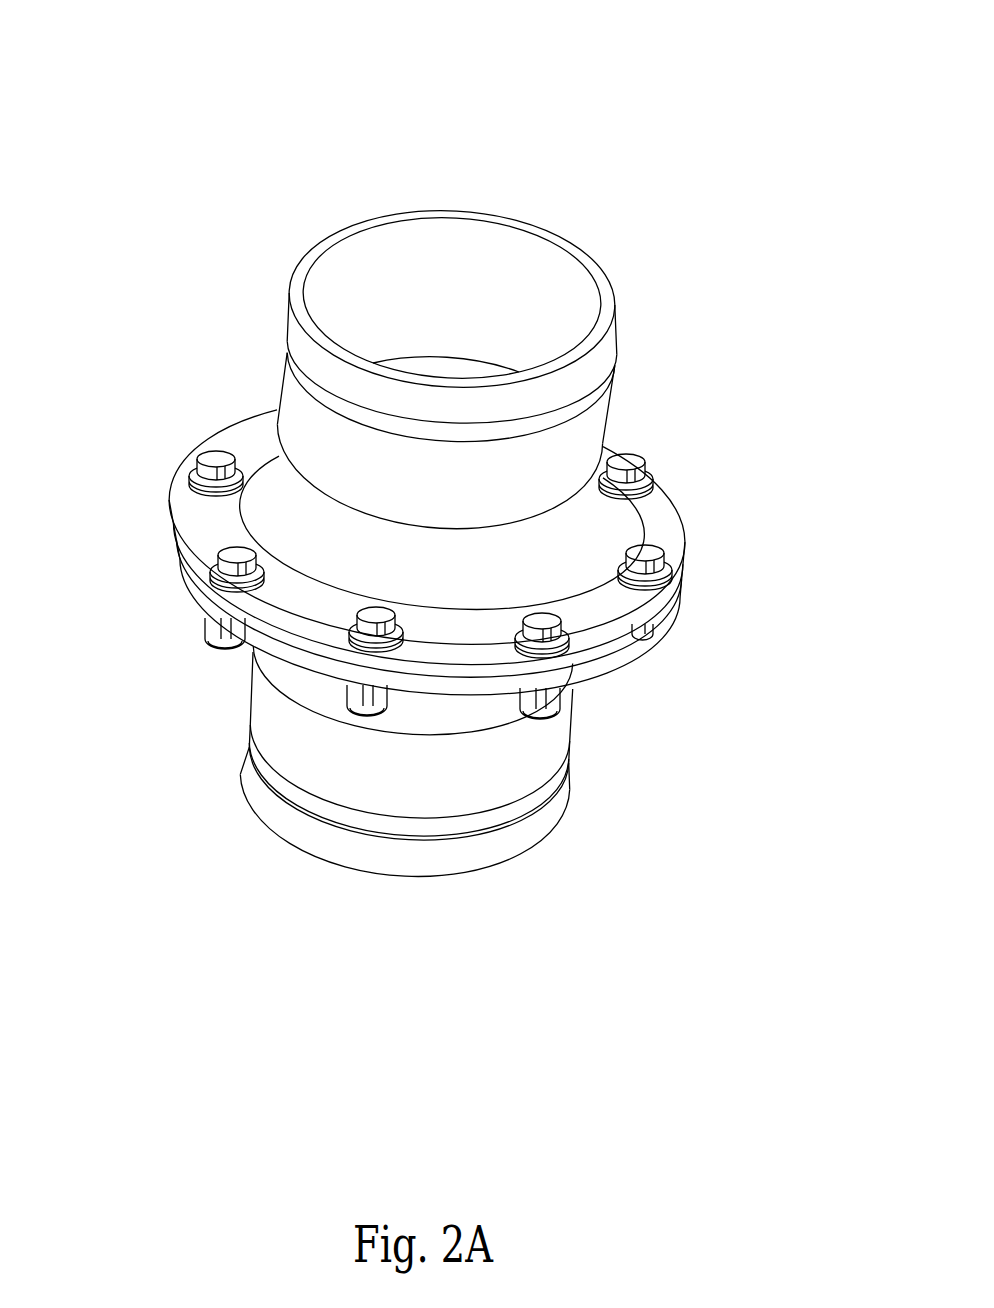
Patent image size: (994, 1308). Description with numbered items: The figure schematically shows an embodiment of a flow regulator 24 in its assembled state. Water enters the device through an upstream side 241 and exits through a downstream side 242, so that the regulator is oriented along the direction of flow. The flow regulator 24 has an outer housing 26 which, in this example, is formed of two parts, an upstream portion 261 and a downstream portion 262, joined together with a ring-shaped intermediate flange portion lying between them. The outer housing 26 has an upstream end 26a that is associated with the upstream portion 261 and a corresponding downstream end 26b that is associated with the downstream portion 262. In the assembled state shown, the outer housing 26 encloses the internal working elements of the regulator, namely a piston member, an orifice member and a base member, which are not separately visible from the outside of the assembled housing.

The flow regulator 24 is at (680, 103).
The upstream side 241 is at (516, 154).
The downstream side 242 is at (398, 969).
The outer housing 26 is at (158, 365).
The upstream end 26a is at (333, 226).
The downstream end 26b is at (272, 833).
The upstream portion 261 is at (280, 405).
The downstream portion 262 is at (253, 708).